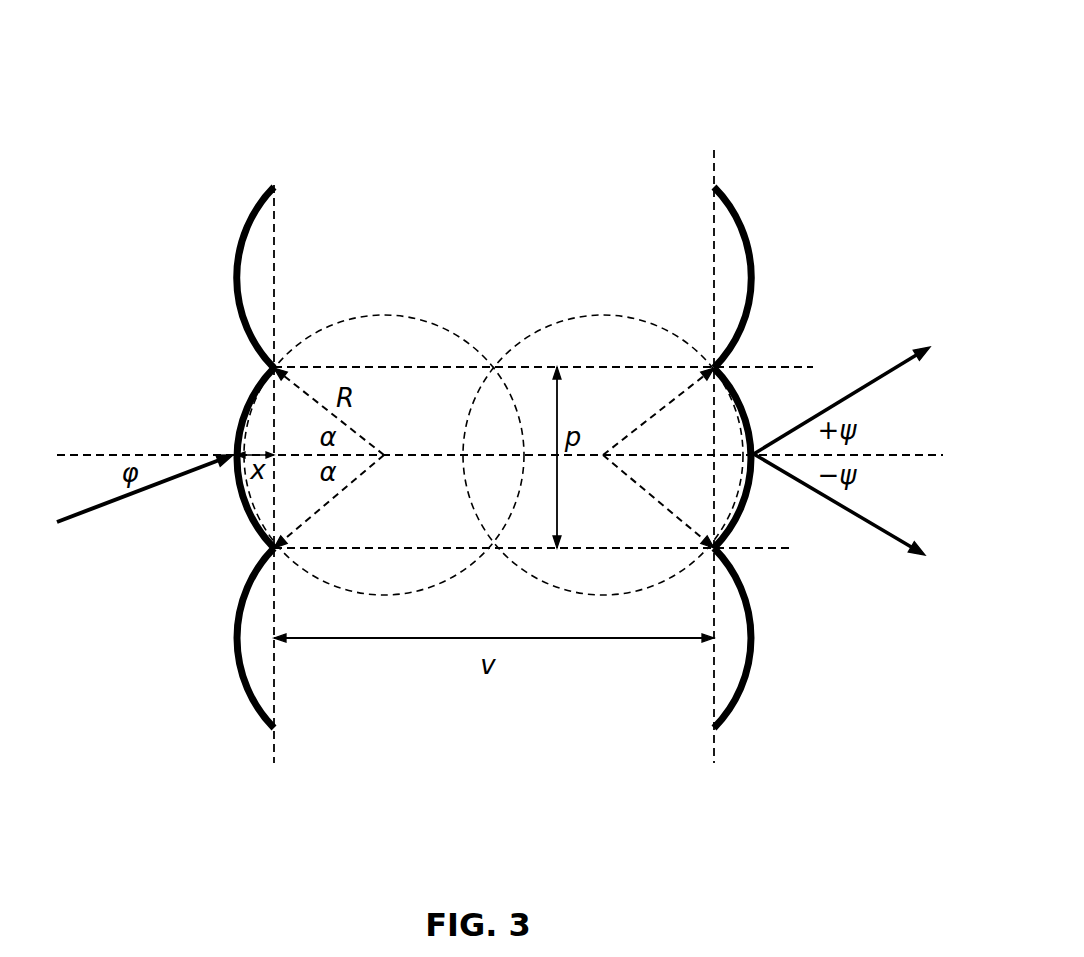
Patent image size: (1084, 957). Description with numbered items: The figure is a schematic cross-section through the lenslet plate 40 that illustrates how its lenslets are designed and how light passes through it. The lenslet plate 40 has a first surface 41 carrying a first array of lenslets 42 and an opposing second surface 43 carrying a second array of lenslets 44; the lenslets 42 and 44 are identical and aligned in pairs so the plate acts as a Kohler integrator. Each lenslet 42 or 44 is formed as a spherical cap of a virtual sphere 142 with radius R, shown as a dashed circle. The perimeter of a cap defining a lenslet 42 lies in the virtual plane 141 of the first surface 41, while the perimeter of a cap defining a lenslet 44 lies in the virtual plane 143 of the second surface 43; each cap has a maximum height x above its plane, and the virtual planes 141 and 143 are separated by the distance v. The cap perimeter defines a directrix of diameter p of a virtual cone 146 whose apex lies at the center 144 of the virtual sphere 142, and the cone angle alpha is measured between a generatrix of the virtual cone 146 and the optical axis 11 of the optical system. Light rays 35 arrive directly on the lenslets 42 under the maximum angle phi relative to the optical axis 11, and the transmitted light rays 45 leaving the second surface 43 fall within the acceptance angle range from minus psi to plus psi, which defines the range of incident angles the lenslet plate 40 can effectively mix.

The optical axis 11 is at (70, 455).
The light rays 35 is at (97, 506).
The lenslet plate 40 is at (461, 840).
The first surface 41 is at (272, 146).
The lenslets 42 is at (250, 397).
The second surface 43 is at (716, 149).
The lenslets 44 is at (737, 397).
The light rays 45 is at (855, 515).
The virtual plane 141 is at (274, 245).
The virtual sphere 142 is at (440, 327).
The virtual plane 143 is at (714, 243).
The center 144 is at (388, 450).
The virtual cone 146 is at (312, 494).